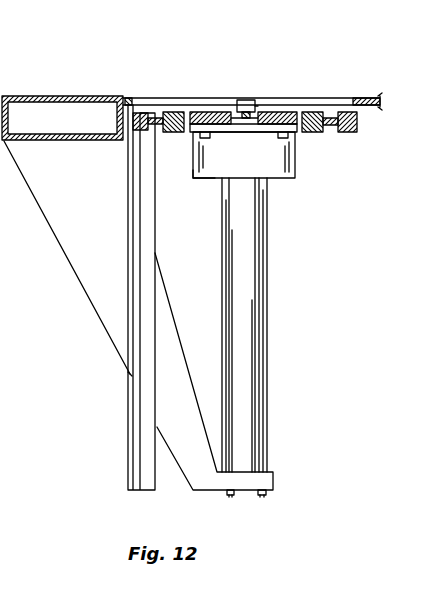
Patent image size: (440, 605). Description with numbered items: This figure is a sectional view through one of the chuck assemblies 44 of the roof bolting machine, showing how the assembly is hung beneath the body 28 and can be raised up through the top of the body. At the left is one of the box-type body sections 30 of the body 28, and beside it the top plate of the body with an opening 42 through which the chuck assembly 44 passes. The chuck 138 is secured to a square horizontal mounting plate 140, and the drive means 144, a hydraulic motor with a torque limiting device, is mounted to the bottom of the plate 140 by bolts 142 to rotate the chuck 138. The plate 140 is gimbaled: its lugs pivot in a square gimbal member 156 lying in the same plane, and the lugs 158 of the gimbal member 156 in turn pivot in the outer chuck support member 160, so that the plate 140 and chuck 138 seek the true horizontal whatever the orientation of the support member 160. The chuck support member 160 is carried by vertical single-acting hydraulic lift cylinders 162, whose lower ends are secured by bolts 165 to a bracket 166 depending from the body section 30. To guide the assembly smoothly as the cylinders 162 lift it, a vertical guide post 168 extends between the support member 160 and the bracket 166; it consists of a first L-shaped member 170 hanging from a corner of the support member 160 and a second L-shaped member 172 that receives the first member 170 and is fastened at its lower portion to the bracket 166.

The body 28 is at (294, 93).
The body section 30 is at (40, 97).
The opening 42 is at (356, 106).
The chuck assembly 44 is at (263, 106).
The chuck 138 is at (258, 100).
The mounting plate 140 is at (208, 111).
The bolt 142 is at (200, 146).
The drive means 144 is at (203, 179).
The gimbal member 156 is at (177, 111).
The lug 158 is at (157, 117).
The chuck support member 160 is at (146, 112).
The lift cylinder 162 is at (268, 258).
The bolt 165 is at (233, 495).
The bracket 166 is at (62, 246).
The guide post 168 is at (130, 405).
The first L-shaped member 170 is at (150, 473).
The second L-shaped member 172 is at (130, 377).